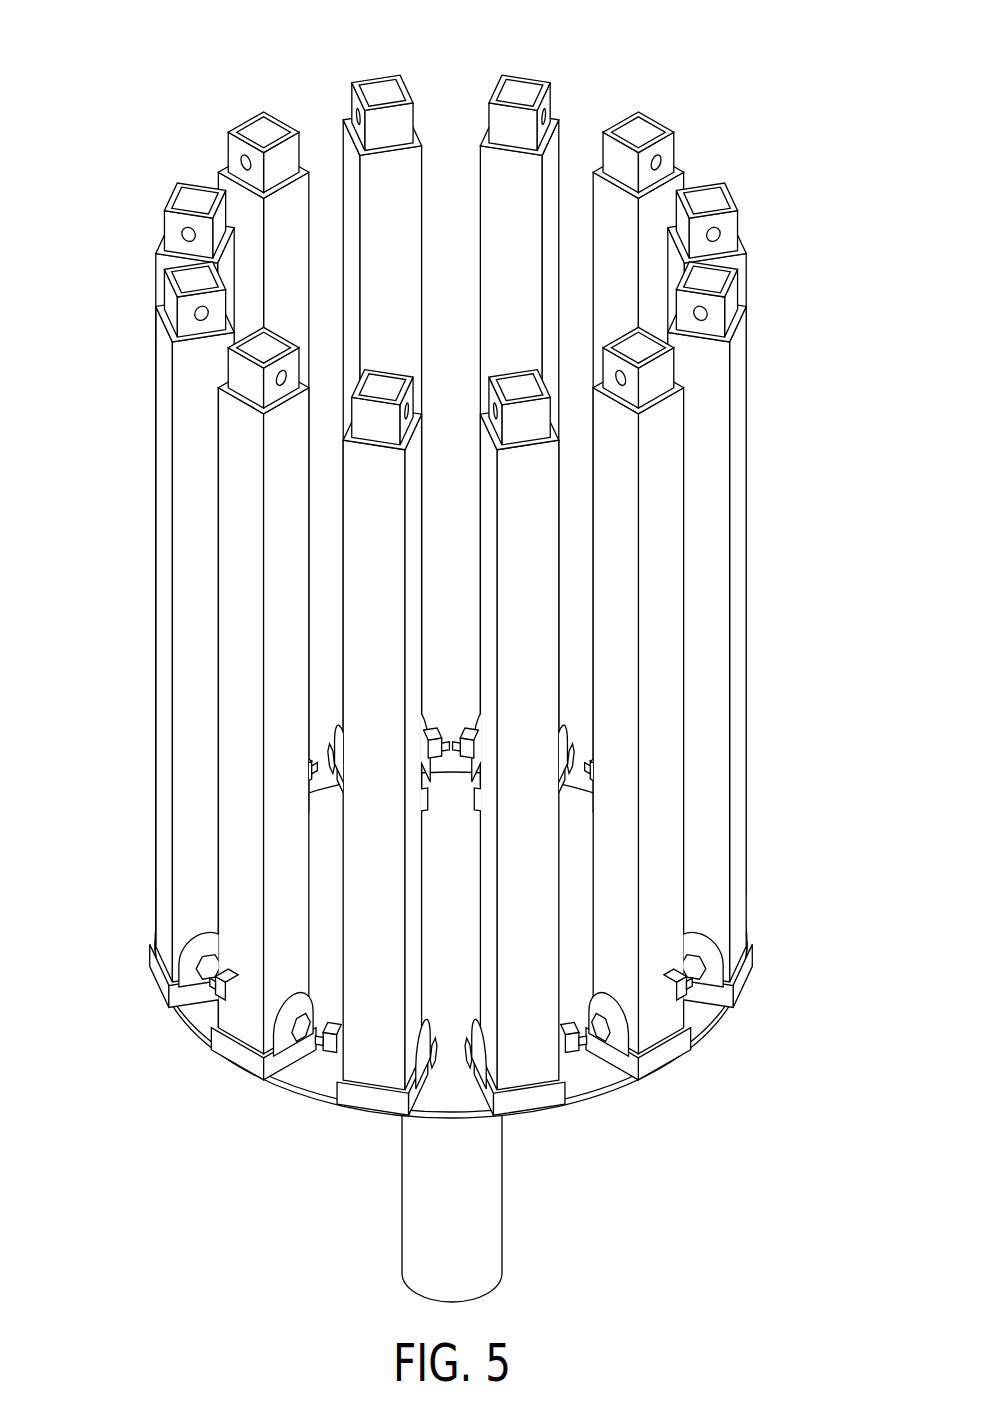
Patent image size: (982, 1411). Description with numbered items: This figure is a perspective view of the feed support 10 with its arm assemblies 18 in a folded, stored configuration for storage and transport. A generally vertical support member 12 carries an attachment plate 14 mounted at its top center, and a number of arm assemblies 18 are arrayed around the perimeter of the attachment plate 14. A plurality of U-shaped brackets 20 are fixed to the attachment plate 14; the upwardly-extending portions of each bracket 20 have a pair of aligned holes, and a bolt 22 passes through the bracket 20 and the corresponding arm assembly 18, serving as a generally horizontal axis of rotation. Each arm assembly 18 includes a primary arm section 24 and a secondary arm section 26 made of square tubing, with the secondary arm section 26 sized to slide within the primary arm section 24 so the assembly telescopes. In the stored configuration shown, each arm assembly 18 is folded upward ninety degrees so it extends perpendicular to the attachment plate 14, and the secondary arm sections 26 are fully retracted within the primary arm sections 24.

The feed support 10 is at (450, 660).
The support member 12 is at (418, 1213).
The attachment plate 14 is at (310, 1080).
The arm assembly 18 is at (150, 709).
The U-shaped bracket 20 is at (185, 988).
The bolt 22 is at (302, 1023).
The primary arm section 24 is at (230, 192).
The secondary arm section 26 is at (265, 120).